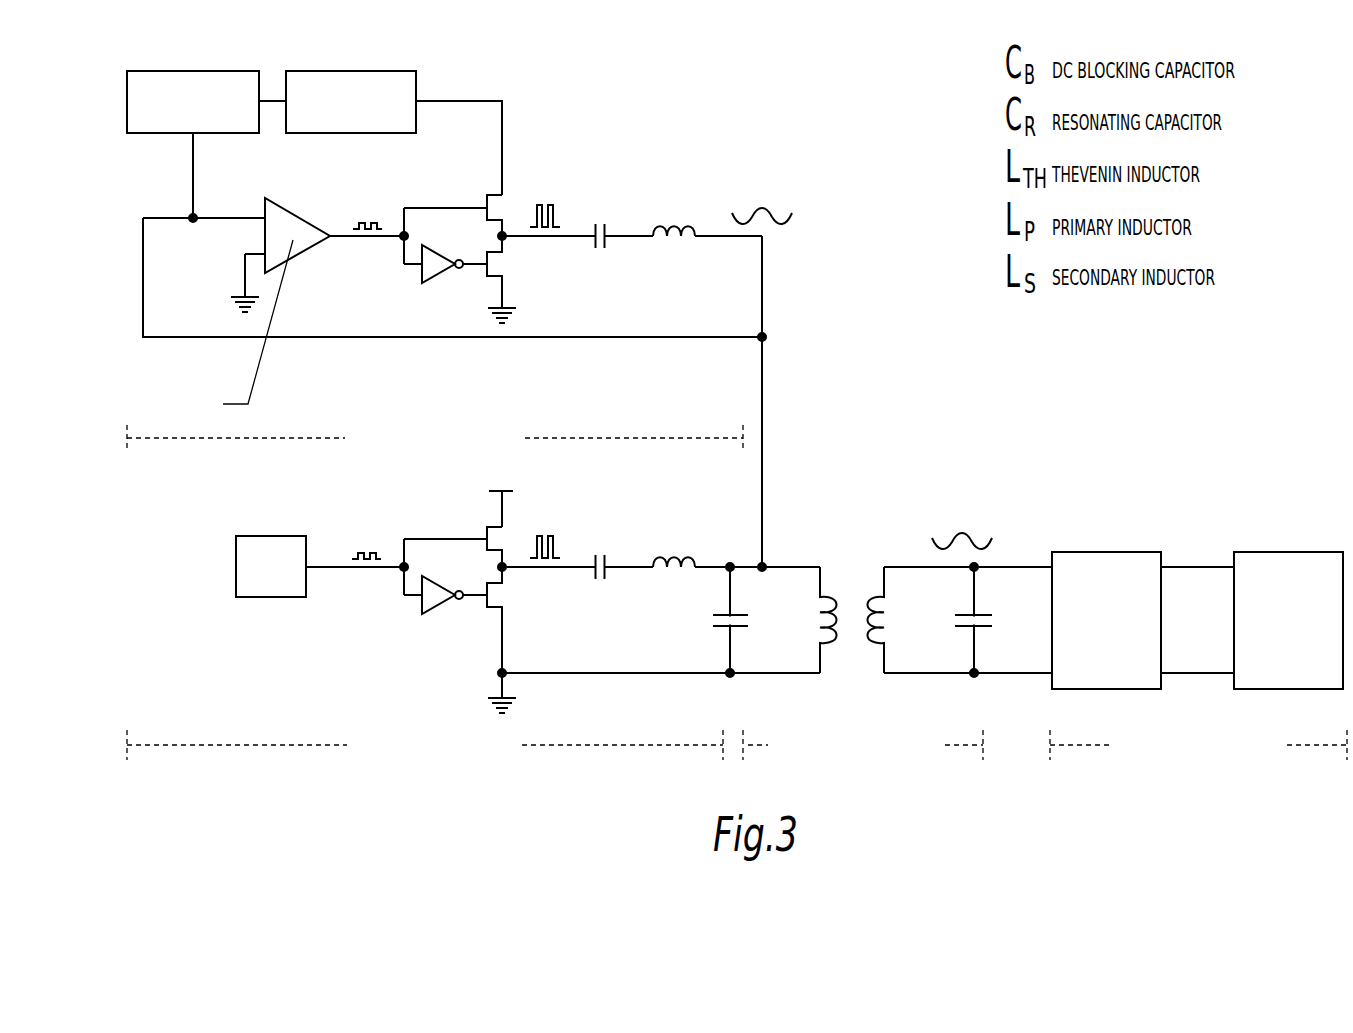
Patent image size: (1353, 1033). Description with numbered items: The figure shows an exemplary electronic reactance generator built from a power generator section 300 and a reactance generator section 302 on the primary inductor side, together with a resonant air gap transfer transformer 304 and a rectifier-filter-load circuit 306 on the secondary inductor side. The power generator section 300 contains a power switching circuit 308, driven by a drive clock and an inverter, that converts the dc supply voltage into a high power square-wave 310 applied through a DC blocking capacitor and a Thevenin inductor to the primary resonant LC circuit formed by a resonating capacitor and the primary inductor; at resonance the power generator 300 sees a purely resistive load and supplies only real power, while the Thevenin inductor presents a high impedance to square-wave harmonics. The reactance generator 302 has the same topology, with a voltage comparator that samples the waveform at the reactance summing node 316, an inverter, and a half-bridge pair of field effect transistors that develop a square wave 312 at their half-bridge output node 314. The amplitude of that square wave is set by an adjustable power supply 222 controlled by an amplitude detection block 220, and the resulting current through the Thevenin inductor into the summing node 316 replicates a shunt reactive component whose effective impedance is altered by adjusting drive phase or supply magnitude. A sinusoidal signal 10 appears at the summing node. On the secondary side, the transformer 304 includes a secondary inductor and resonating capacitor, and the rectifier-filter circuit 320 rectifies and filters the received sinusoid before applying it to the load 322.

The reactance signal 10 is at (762, 195).
The amplitude detection block 220 is at (193, 84).
The adjustable power supply 222 is at (351, 84).
The power generator section 300 is at (482, 613).
The reactance generator section 302 is at (458, 355).
The resonant air gap transfer transformer 304 is at (897, 659).
The rectifier-filter-load circuit 306 is at (1198, 649).
The power switching circuit 308 is at (403, 242).
The high power square-wave 310 is at (547, 527).
The square wave 312 is at (547, 197).
The half-bridge output node 314 is at (503, 240).
The reactance summing node 316 is at (817, 524).
The rectifier-filter circuit 320 is at (1106, 601).
The load 322 is at (1288, 601).